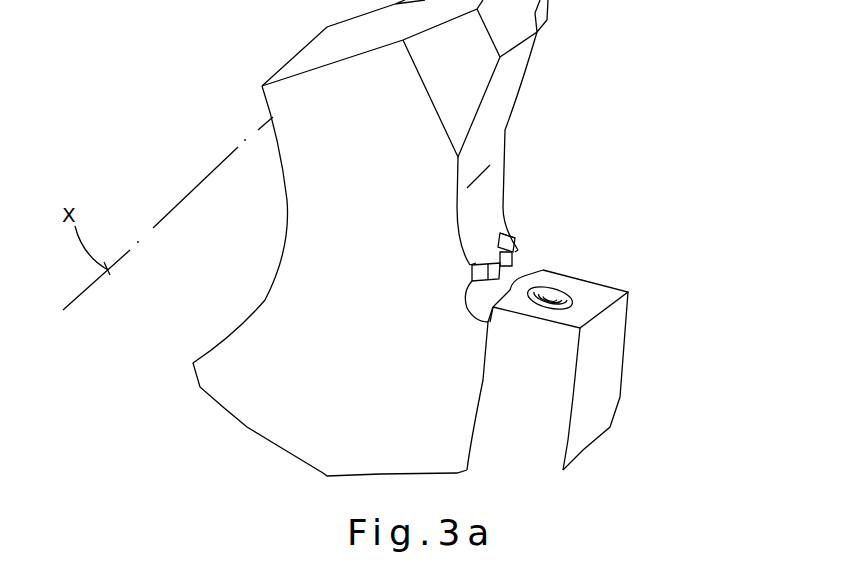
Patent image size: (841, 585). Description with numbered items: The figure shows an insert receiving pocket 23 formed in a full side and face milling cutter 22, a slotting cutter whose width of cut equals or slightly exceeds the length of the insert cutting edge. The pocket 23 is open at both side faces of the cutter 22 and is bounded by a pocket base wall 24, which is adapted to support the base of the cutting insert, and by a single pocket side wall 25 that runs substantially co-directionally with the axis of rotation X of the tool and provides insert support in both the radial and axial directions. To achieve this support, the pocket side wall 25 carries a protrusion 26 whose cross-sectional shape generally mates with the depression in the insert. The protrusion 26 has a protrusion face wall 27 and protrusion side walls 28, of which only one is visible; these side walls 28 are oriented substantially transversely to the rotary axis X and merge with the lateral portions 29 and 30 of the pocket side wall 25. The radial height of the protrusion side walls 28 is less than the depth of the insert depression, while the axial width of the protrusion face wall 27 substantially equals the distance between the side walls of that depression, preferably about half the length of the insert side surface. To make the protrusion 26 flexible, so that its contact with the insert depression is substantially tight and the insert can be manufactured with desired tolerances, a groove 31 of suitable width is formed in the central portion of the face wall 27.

The full side and face milling cutter 22 is at (300, 210).
The insert receiving pocket 23 is at (618, 232).
The pocket base wall 24 is at (603, 295).
The pocket side wall 25 is at (493, 233).
The protrusion 26 is at (527, 263).
The protrusion face wall 27 is at (507, 283).
The protrusion side walls 28 is at (493, 266).
The lateral portion of the pocket side surface 29 is at (470, 272).
The lateral portion of the pocket side surface 30 is at (512, 242).
The groove 31 is at (494, 246).